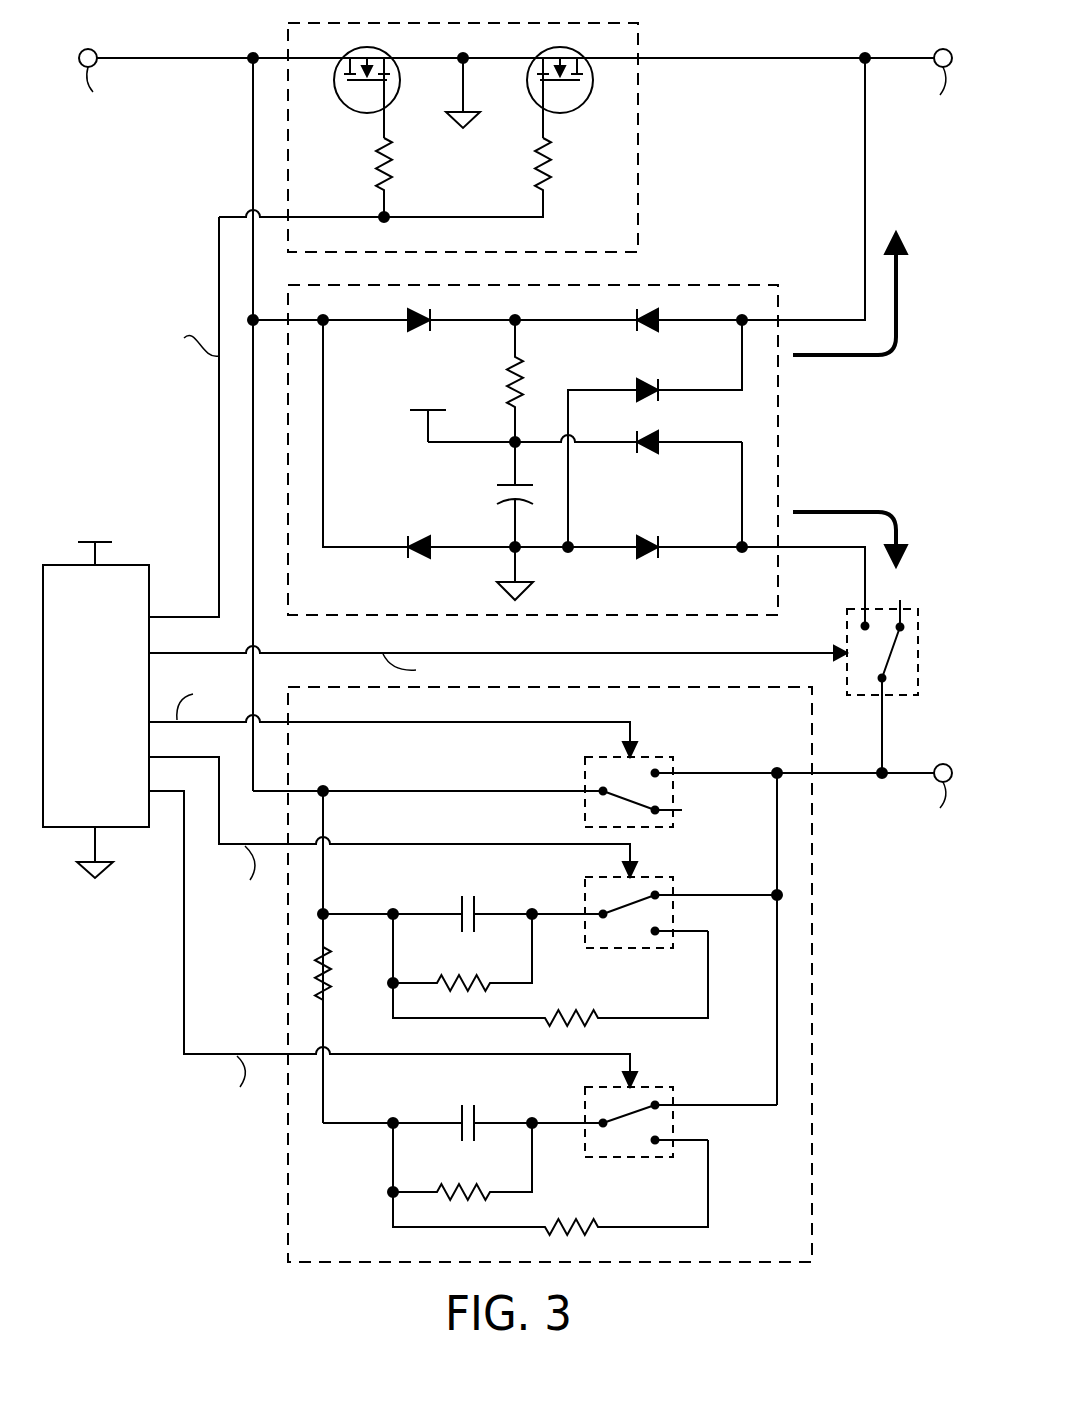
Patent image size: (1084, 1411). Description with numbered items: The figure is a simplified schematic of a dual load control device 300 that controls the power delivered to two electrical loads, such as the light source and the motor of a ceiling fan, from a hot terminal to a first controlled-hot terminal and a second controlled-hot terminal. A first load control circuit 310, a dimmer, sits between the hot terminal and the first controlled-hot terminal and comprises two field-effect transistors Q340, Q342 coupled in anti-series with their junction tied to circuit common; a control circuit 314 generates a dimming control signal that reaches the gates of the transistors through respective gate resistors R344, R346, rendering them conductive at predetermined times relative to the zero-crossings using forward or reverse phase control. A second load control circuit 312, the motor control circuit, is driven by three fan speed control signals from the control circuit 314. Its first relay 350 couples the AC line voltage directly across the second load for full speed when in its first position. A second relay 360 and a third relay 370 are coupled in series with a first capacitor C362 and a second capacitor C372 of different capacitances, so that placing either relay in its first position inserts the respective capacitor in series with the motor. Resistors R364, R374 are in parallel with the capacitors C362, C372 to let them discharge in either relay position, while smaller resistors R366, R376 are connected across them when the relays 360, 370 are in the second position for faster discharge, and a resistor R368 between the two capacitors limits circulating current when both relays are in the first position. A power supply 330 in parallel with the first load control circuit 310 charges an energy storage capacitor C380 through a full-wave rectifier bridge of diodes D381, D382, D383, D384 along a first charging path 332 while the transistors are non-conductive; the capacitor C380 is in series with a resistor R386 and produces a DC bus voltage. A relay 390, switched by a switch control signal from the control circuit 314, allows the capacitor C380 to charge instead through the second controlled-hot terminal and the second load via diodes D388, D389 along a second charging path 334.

The load control device 300 is at (146, 240).
The first load control circuit 310 is at (638, 125).
The second load control circuit 312 is at (288, 1183).
The control circuit 314 is at (113, 809).
The power supply 330 is at (778, 435).
The first charging path 332 is at (820, 357).
The second charging path 334 is at (822, 512).
The first single-pole double-throw relay 350 is at (585, 768).
The second SPDT relay 360 is at (585, 895).
The third SPDT relay 370 is at (585, 1105).
The SPDT relay 390 is at (912, 697).
The first field-effect transistor Q340 is at (345, 101).
The second field-effect transistor Q342 is at (584, 107).
The gate resistor R344 is at (392, 168).
The gate resistor R346 is at (551, 170).
The resistor R386 is at (500, 400).
The energy storage capacitor C380 is at (498, 484).
The diode D381 is at (418, 334).
The diode D382 is at (648, 334).
The diode D383 is at (420, 535).
The diode D384 is at (645, 398).
The diode D388 is at (648, 454).
The diode D389 is at (648, 536).
The first capacitor C362 is at (460, 903).
The resistor R364 is at (440, 979).
The resistor R366 is at (576, 1012).
The resistor R368 is at (333, 976).
The second capacitor C372 is at (460, 1112).
The resistor R374 is at (447, 1160).
The resistor R376 is at (578, 1220).